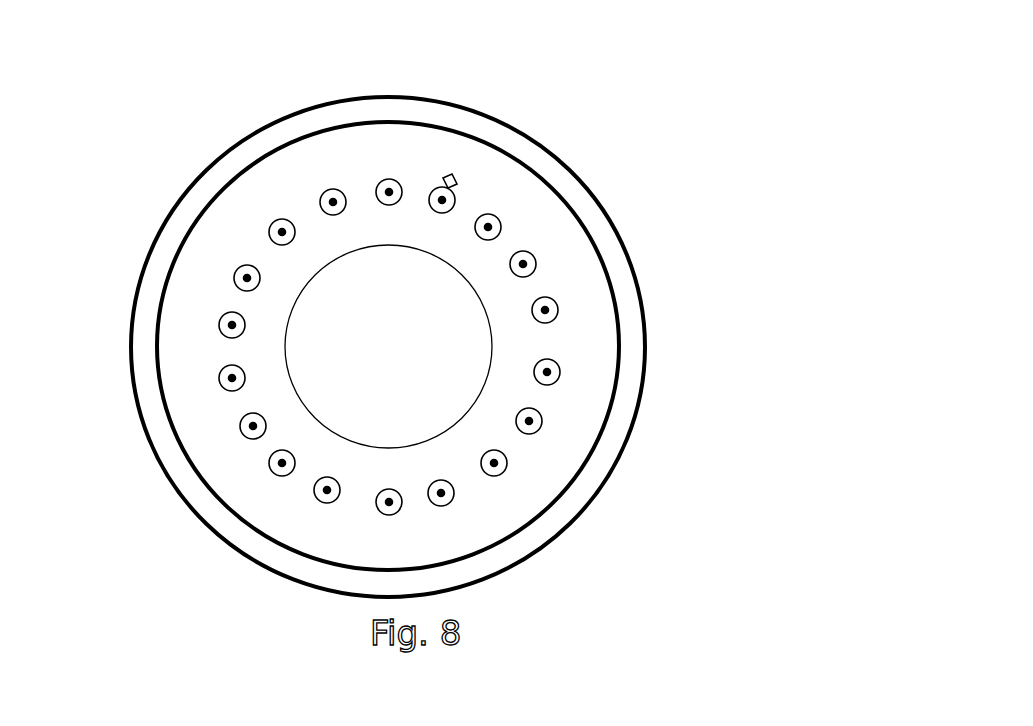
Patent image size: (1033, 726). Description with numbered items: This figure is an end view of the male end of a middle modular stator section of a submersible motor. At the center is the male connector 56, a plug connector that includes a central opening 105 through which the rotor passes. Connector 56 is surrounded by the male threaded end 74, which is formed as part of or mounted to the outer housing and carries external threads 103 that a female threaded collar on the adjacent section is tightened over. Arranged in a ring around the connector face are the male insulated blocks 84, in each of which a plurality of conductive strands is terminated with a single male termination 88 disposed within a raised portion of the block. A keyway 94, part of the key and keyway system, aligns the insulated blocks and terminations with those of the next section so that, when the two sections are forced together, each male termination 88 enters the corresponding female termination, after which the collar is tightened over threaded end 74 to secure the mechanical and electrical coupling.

The male connector 56 is at (425, 162).
The male threaded end 74 is at (138, 281).
The male insulated block 84 is at (270, 463).
The male termination 88 is at (501, 225).
The keyway 94 is at (456, 178).
The external threads 103 is at (205, 205).
The central opening 105 is at (480, 357).